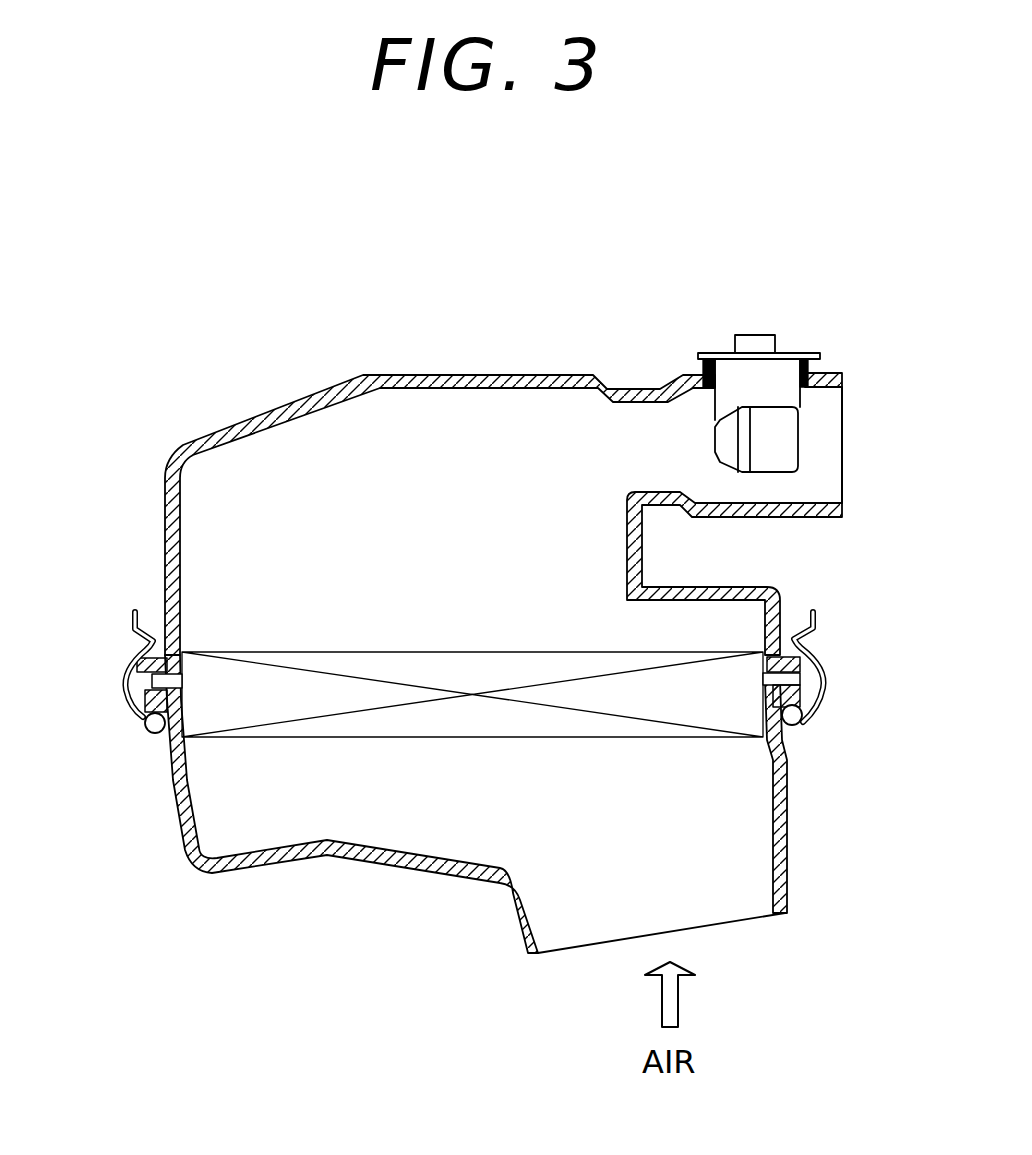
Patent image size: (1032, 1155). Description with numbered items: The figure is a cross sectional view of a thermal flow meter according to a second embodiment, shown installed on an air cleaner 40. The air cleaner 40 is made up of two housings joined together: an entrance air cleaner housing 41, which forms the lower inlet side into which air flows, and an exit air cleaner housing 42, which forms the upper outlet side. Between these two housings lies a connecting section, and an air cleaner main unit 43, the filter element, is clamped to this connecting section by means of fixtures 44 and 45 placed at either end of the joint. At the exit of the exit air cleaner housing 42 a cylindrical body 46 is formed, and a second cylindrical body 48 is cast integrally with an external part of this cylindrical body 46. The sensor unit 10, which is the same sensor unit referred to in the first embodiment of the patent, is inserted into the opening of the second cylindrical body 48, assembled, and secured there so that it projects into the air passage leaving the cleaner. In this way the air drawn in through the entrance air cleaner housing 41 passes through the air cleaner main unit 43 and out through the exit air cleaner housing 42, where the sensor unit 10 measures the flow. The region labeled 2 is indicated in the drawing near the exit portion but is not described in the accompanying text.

The intake duct mounting portion 2 is at (828, 483).
The sensor unit 10 is at (770, 339).
The air cleaner 40 is at (475, 625).
The entrance air cleaner housing 41 is at (188, 846).
The exit air cleaner housing 42 is at (212, 430).
The air cleaner main unit 43 is at (243, 737).
The fixture 44 is at (127, 687).
The fixture 45 is at (822, 678).
The cylindrical body 46 is at (837, 370).
The second cylindrical body 48 is at (817, 360).